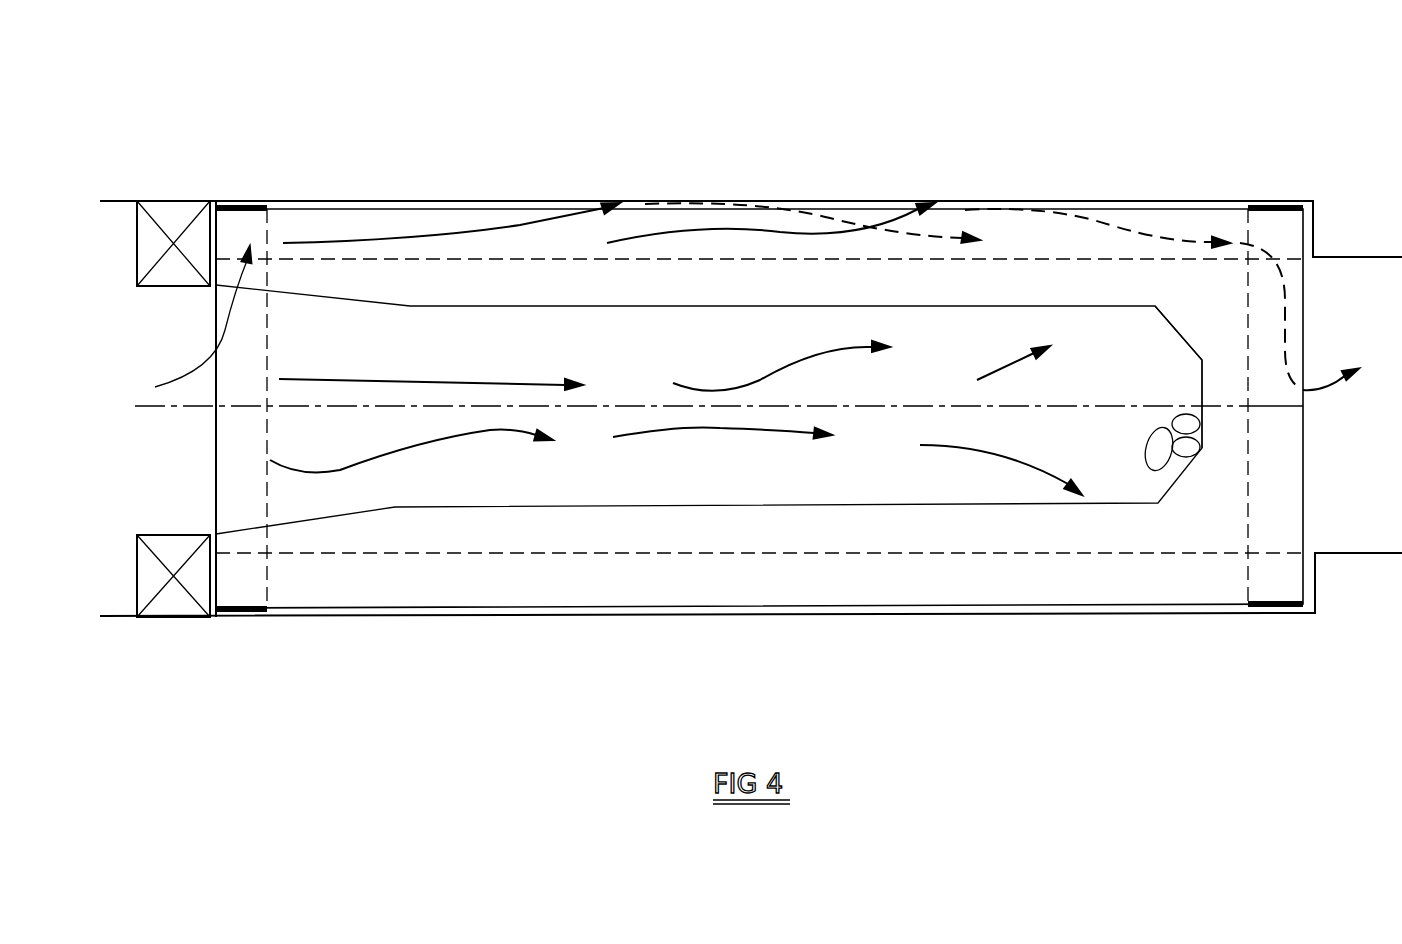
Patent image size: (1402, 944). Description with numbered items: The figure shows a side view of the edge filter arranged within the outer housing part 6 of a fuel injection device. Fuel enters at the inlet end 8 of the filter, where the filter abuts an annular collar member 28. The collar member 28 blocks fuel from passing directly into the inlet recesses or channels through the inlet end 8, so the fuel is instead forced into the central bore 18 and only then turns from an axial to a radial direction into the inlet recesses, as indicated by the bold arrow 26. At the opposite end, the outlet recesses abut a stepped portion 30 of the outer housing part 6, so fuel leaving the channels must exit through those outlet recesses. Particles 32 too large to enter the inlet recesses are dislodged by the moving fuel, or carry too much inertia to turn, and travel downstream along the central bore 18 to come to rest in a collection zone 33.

The outer housing part 6 is at (735, 632).
The inlet end 8 is at (200, 312).
The central bore 18 is at (1040, 290).
The bold arrow 26 is at (250, 323).
The annular collar member 28 is at (182, 192).
The stepped portion 30 is at (1343, 215).
The particles 32 is at (1158, 470).
The collection zone 33 is at (1128, 324).